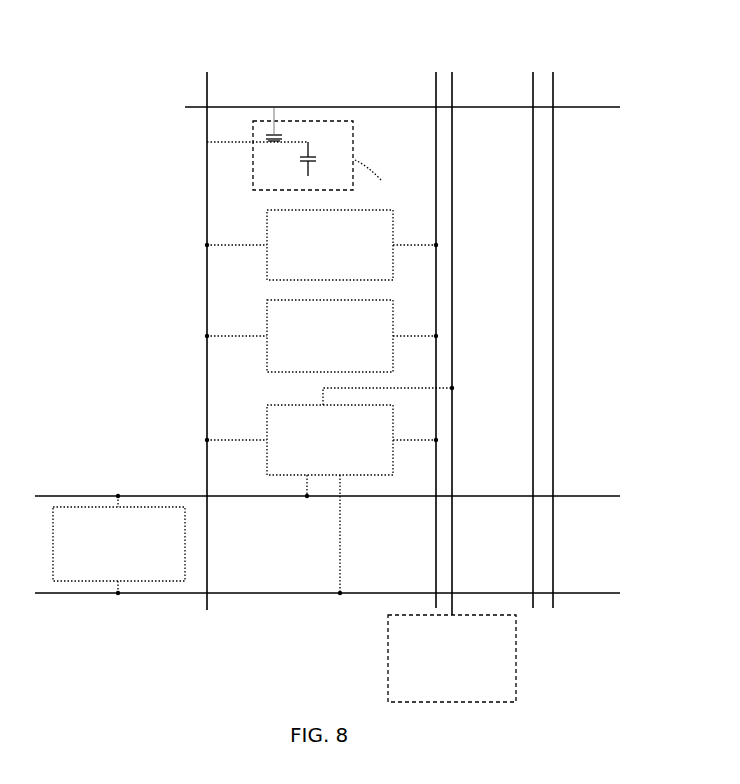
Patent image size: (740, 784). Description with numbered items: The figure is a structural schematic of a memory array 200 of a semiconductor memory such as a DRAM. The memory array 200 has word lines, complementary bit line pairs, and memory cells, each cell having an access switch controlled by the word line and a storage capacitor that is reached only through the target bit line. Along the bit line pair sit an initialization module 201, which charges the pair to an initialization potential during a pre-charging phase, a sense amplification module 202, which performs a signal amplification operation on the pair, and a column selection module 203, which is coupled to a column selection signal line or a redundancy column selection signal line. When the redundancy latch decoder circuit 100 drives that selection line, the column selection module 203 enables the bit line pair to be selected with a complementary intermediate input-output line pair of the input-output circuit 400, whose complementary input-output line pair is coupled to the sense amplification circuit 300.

The redundancy latch decoder circuit 100 is at (517, 650).
The memory array 200 is at (383, 50).
The initialization module 201 is at (266, 228).
The sense amplification module 202 is at (266, 325).
The column selection module 203 is at (266, 430).
The sense amplification circuit 300 is at (105, 492).
The input-output circuit 400 is at (85, 290).